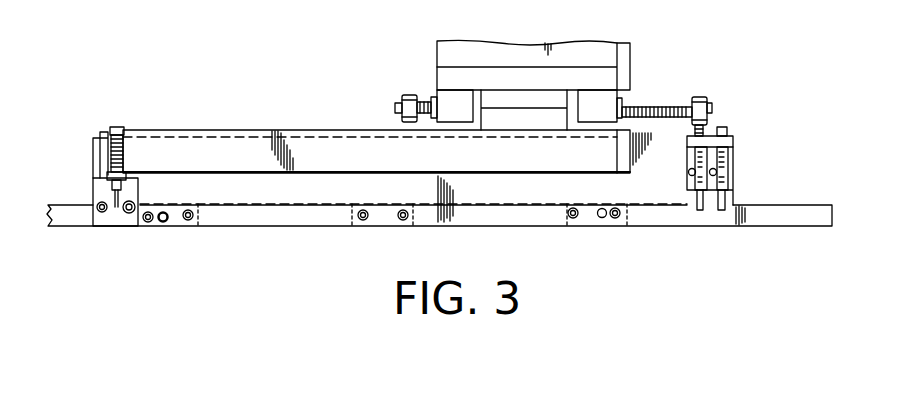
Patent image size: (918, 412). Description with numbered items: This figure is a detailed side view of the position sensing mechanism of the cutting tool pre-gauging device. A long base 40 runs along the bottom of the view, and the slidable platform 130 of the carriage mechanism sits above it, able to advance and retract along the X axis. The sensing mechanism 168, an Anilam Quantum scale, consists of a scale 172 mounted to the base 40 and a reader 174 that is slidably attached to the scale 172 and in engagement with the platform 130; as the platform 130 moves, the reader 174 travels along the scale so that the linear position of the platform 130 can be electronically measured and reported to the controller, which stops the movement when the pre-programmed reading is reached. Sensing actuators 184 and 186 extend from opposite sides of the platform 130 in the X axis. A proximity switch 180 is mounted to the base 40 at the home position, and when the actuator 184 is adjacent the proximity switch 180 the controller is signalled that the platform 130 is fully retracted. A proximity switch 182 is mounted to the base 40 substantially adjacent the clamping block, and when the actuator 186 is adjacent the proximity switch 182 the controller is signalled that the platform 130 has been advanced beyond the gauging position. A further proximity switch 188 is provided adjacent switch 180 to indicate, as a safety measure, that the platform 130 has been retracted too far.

The base 40 is at (767, 217).
The slidable platform 130 is at (618, 43).
The sensing mechanism 168 is at (362, 72).
The scale 172 is at (210, 145).
The reader 174 is at (498, 113).
The proximity switch 180 is at (693, 187).
The proximity switch 182 is at (120, 138).
The sensing actuator 184 is at (697, 95).
The sensing actuator 186 is at (413, 95).
The proximity switch 188 is at (727, 130).